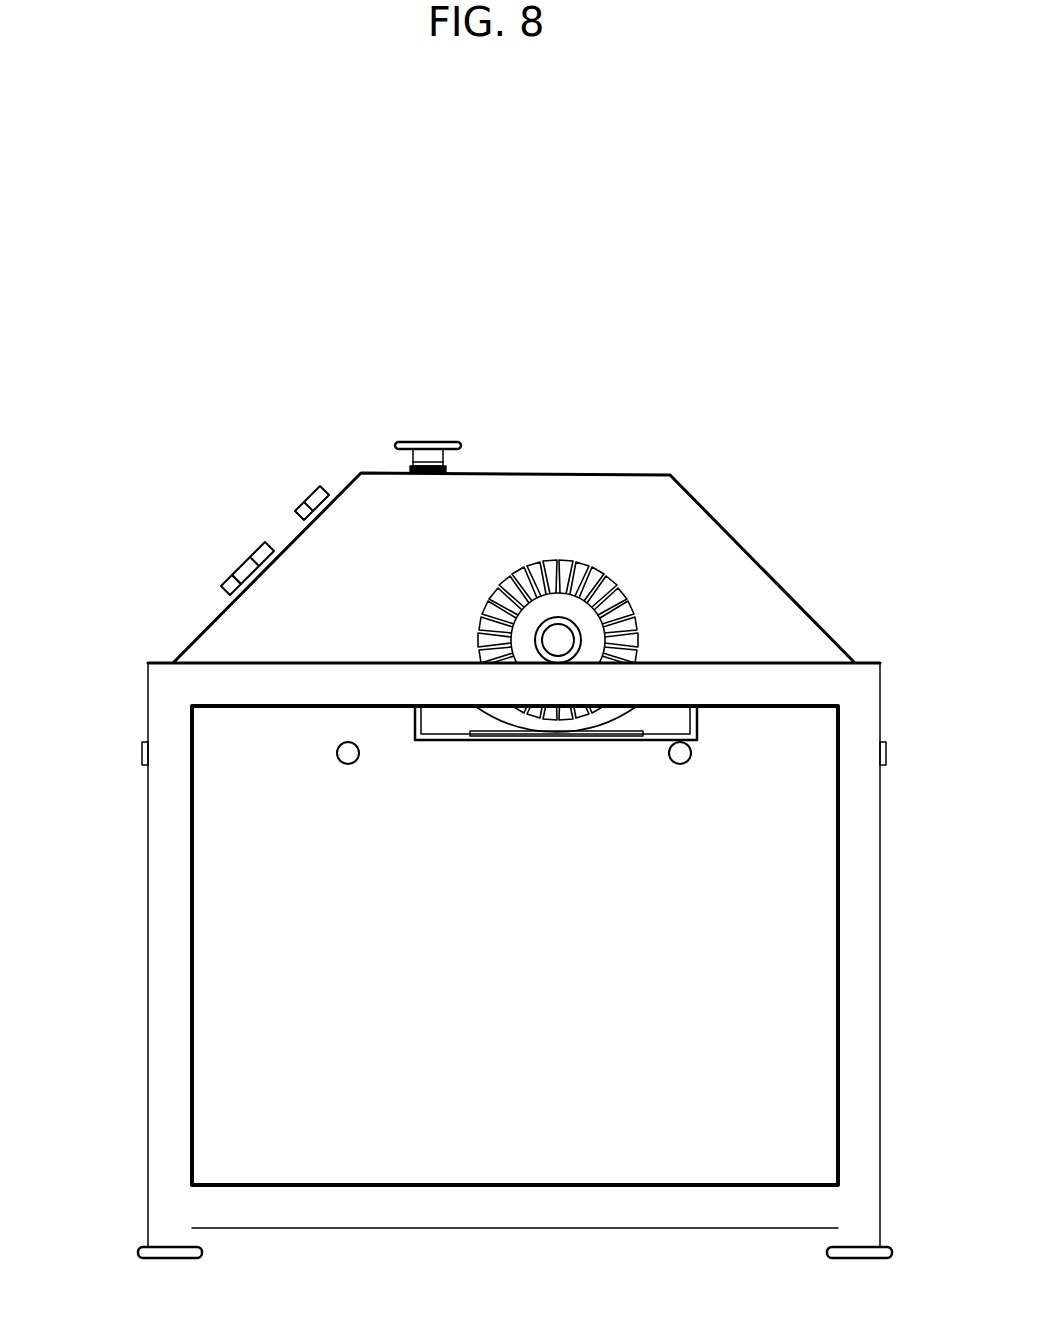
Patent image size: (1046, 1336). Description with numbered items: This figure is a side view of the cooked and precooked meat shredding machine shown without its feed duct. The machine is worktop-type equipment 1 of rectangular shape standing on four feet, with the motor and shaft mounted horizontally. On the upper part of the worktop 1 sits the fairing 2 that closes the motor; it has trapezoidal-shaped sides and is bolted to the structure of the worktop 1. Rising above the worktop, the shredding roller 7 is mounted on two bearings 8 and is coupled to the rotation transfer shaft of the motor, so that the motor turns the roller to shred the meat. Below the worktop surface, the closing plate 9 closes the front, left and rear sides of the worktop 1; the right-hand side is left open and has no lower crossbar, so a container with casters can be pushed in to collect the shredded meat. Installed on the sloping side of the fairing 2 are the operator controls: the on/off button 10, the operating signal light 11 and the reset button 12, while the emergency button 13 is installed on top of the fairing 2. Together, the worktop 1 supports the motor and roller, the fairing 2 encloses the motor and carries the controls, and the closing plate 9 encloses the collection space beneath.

The worktop 1 is at (798, 687).
The fairing 2 is at (650, 538).
The shredding roller 7 is at (556, 523).
The bearings 8 is at (558, 610).
The closing plate 9 is at (733, 1022).
The on/off button 10 is at (228, 588).
The operating signal light 11 is at (302, 505).
The reset button 12 is at (250, 562).
The emergency button 13 is at (428, 445).